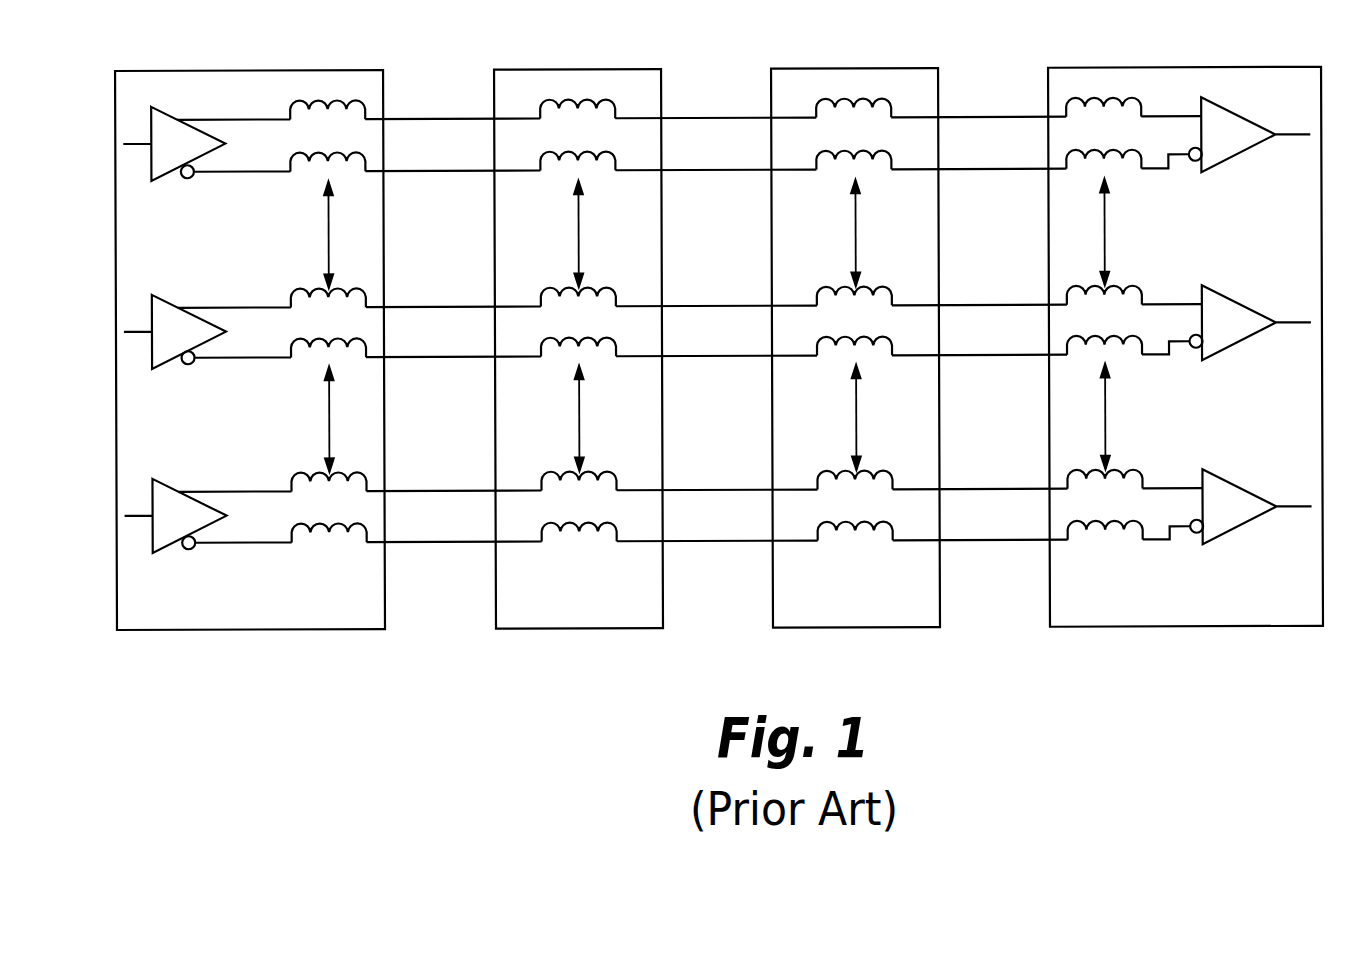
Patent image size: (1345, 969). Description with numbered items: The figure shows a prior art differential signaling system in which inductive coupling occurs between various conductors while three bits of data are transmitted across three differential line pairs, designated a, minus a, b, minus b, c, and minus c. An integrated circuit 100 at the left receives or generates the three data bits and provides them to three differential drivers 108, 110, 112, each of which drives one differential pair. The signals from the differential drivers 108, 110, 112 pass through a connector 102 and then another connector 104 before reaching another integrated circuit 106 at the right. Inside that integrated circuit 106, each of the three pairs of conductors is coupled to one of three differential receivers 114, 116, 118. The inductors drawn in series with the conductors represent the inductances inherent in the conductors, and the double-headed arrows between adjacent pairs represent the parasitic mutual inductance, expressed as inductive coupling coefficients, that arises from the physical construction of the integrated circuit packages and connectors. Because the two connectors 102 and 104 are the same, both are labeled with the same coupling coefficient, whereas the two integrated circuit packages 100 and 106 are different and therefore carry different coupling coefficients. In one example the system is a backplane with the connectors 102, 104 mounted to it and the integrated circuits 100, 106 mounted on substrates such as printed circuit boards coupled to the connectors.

The integrated circuit 100 is at (127, 70).
The connector 102 is at (513, 69).
The connector 104 is at (792, 70).
The integrated circuit 106 is at (1068, 70).
The differential driver 108 is at (163, 179).
The differential driver 110 is at (163, 367).
The differential driver 112 is at (163, 551).
The differential receiver 114 is at (1212, 174).
The differential receiver 116 is at (1212, 362).
The differential receiver 118 is at (1212, 546).